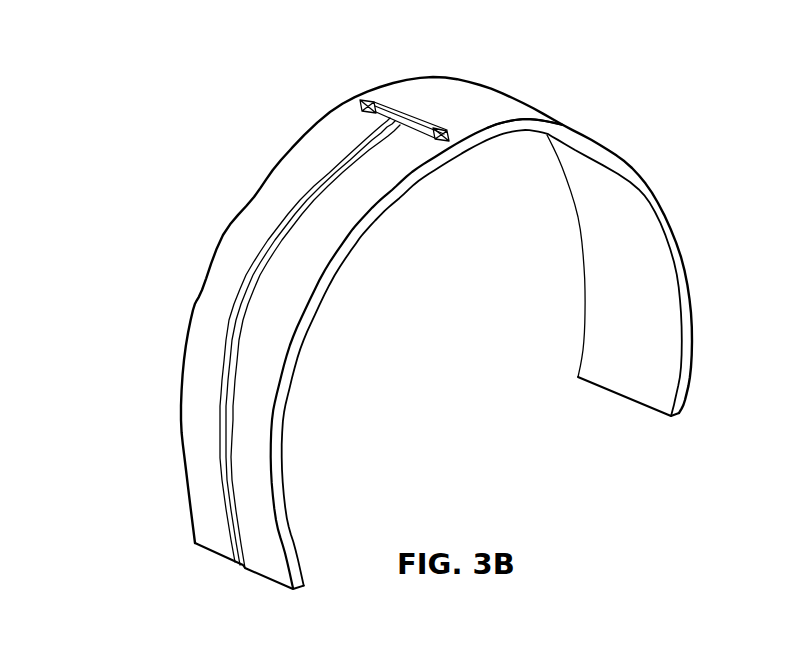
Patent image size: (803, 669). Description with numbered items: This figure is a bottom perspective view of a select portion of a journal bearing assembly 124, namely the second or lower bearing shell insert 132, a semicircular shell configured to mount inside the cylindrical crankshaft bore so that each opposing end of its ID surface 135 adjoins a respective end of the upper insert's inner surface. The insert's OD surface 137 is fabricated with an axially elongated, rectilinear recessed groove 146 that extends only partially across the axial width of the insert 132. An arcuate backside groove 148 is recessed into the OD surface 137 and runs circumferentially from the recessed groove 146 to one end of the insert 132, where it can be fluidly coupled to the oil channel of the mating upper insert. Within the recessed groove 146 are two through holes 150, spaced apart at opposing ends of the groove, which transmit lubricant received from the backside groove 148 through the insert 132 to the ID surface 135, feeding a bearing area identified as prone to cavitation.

The journal bearing assembly 124 is at (362, 304).
The lower bearing shell insert 132 is at (197, 295).
The ID surface 135 is at (600, 335).
The OD surface 137 is at (517, 113).
The axially elongated recessed groove 146 is at (397, 110).
The arcuate backside groove 148 is at (288, 235).
The through holes 150 is at (368, 99).